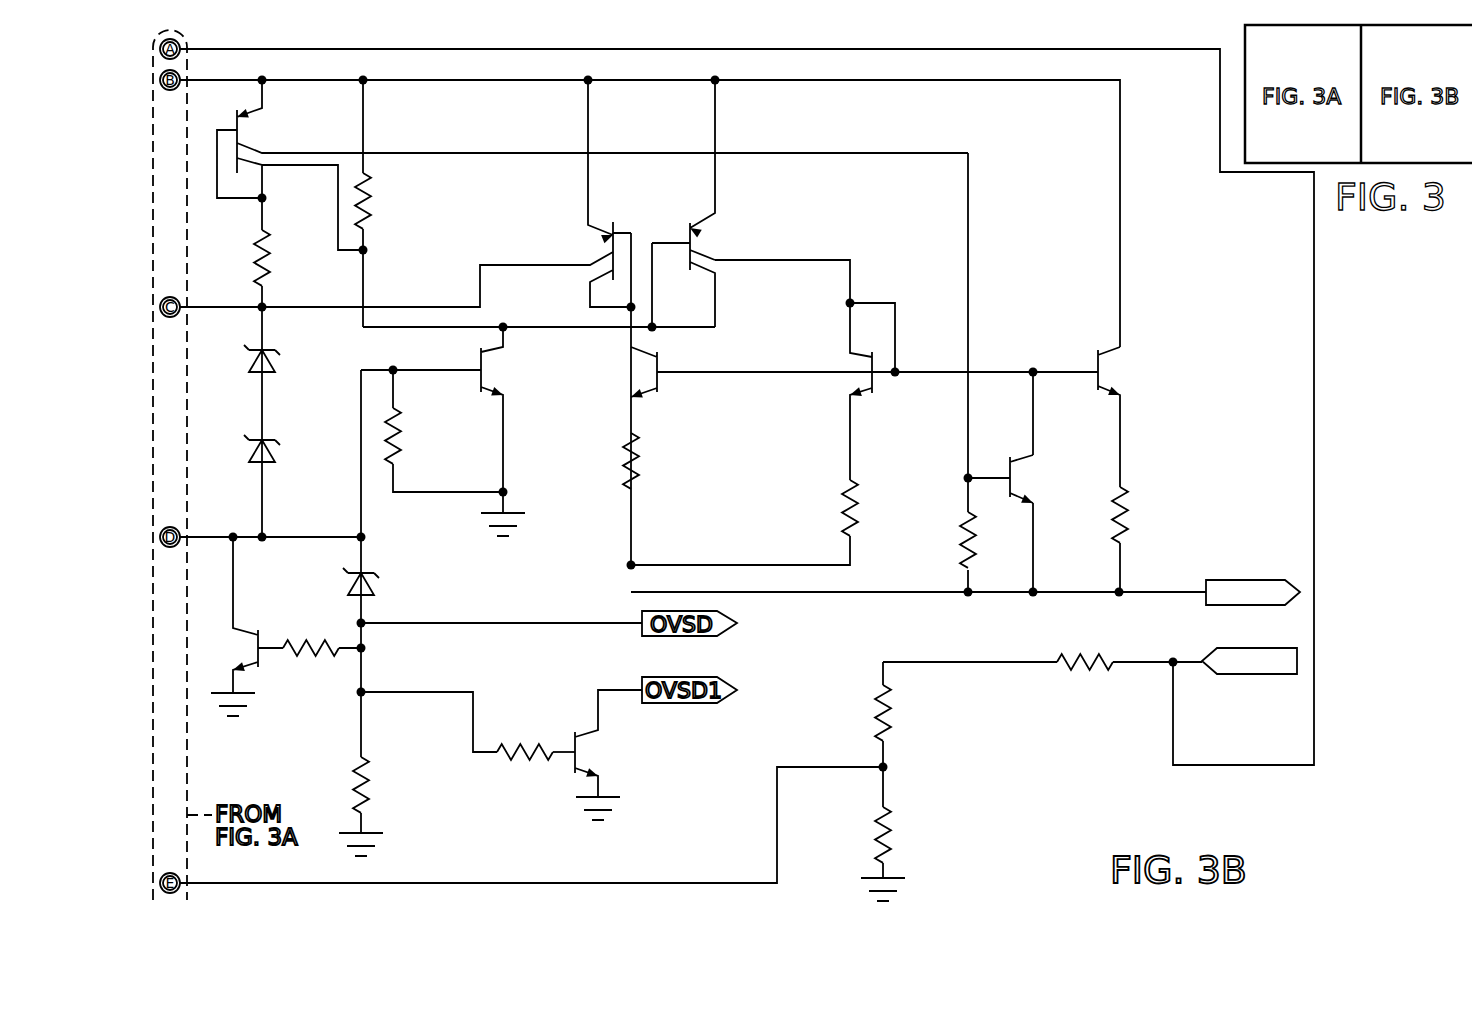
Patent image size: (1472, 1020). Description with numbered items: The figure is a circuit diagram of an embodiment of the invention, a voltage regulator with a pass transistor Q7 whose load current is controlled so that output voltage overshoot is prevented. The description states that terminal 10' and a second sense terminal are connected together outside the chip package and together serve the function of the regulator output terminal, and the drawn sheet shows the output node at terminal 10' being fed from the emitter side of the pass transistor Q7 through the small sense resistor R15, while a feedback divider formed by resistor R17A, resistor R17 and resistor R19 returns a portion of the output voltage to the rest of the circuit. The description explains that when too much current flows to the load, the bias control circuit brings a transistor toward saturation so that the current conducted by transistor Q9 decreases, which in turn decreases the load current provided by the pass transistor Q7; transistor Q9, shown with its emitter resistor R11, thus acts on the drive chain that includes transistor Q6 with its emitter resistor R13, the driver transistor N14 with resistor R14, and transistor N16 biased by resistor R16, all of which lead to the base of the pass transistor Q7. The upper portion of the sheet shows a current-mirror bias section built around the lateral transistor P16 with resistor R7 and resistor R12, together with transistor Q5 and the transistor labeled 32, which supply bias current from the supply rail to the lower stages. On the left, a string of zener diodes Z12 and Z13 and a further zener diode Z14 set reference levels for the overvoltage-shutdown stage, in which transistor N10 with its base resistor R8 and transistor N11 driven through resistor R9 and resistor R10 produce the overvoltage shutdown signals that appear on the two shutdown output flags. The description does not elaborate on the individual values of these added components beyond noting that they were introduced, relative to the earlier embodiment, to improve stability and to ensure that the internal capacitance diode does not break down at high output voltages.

The transistor Q8 (P18) 32 is at (738, 203).
The terminal 10' is at (1218, 606).
The transistor P16 is at (592, 155).
The resistor R7 is at (303, 262).
The resistor R12 is at (408, 203).
The zener diode Z12 is at (276, 367).
The zener diode Z13 is at (276, 454).
The transistor Q5 is at (596, 193).
The transistor Q9 is at (462, 431).
The resistor R11 is at (444, 431).
The transistor Q6 is at (617, 392).
The resistor R13 is at (662, 460).
The transistor N14 is at (798, 378).
The resistor R14 is at (744, 510).
The resistor R16 is at (924, 534).
The transistor N16 is at (1048, 486).
The pass transistor Q7 is at (1204, 390).
The resistor R15 is at (1165, 527).
The resistor R17A is at (1094, 710).
The resistor R17 is at (925, 703).
The resistor R19 is at (905, 834).
The zener diode Z14 is at (374, 579).
The transistor N10 is at (225, 626).
The resistor R8 is at (309, 695).
The resistor R10 is at (397, 776).
The resistor R9 is at (538, 799).
The transistor N11 is at (613, 755).